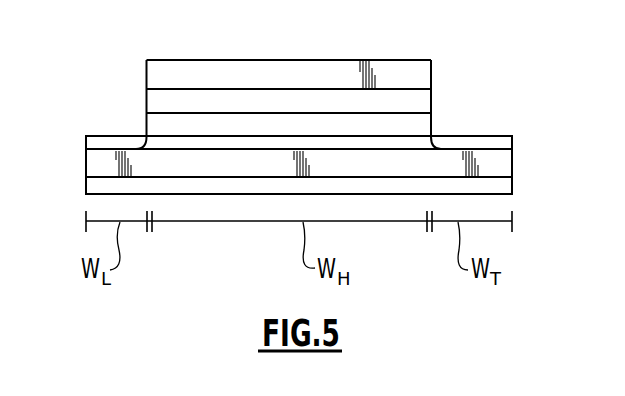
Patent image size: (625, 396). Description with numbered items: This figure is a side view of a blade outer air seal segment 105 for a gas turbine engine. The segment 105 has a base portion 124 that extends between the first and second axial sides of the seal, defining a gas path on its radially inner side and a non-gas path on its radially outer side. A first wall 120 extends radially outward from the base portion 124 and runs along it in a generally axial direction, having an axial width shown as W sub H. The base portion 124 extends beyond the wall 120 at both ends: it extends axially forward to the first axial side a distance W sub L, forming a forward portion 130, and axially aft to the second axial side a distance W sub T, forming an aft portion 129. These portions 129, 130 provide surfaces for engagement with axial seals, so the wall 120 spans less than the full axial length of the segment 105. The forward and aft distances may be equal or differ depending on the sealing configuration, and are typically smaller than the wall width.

The BOAS segment 105 is at (315, 107).
The first wall 120 is at (338, 96).
The base portion 124 is at (482, 143).
The aft portion of the base portion 129 is at (492, 137).
The forward portion of the base portion 130 is at (110, 135).